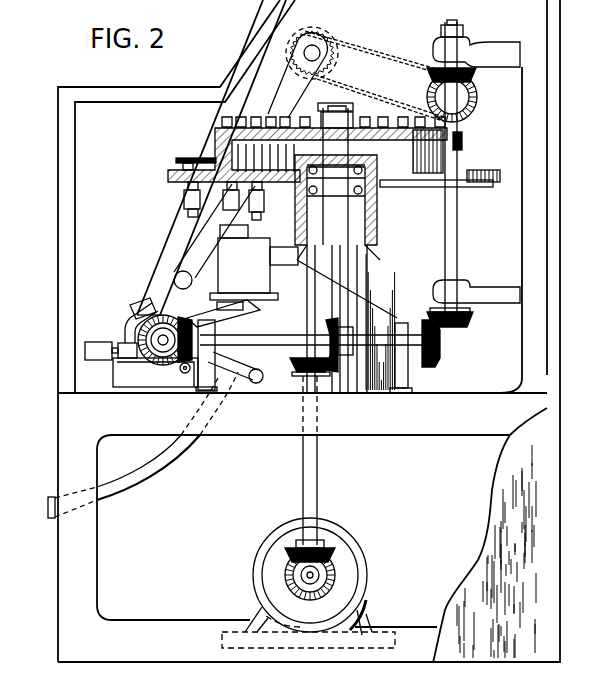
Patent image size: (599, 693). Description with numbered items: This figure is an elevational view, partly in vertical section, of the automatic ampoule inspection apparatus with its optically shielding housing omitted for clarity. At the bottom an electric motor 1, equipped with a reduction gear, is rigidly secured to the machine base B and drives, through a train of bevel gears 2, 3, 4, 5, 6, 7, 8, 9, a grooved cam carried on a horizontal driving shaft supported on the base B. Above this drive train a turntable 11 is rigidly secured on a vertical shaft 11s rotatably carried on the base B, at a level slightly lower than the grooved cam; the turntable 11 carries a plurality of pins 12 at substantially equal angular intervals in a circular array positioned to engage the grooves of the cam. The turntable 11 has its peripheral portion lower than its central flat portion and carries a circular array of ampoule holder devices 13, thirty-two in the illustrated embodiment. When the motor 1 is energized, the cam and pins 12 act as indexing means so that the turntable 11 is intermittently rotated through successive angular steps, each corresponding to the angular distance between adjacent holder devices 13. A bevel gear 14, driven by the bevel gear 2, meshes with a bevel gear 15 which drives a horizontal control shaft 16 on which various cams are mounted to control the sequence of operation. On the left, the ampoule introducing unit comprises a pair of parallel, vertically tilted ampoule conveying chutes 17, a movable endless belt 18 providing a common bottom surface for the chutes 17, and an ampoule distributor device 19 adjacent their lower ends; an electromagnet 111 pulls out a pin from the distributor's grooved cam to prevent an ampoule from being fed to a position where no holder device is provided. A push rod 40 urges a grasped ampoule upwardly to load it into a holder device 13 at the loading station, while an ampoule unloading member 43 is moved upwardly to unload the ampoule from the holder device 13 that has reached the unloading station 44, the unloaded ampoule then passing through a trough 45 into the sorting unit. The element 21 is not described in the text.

The electric motor 1 is at (254, 578).
The bevel gear 2 is at (285, 574).
The bevel gear 3 is at (335, 555).
The bevel gear 4 is at (300, 388).
The bevel gear 5 is at (332, 320).
The bevel gear 6 is at (429, 360).
The bevel gear 7 is at (470, 322).
The bevel gear 8 is at (478, 78).
The bevel gear 9 is at (478, 101).
The turntable 11 is at (497, 174).
The vertical shaft 11s is at (352, 222).
The pins 12 is at (394, 117).
The ampoule holder devices 13 is at (186, 194).
The bevel gear 14 is at (184, 374).
The bevel gear 15 is at (176, 366).
The horizontal control shaft 16 is at (155, 372).
The ampoule conveying chutes 17 is at (176, 245).
The movable endless belt 18 is at (292, 87).
The ampoule distributor device 19 is at (130, 324).
The clamp 21 is at (134, 307).
The push rod 40 is at (258, 240).
The ampoule unloading member 43 is at (232, 235).
The unloading station 44 is at (228, 206).
The trough 45 is at (166, 458).
The electromagnet 111 is at (86, 351).
The machine base B is at (405, 660).